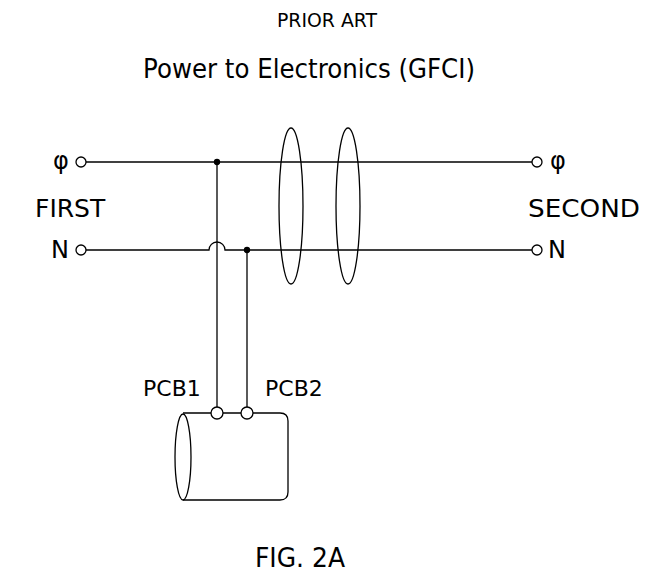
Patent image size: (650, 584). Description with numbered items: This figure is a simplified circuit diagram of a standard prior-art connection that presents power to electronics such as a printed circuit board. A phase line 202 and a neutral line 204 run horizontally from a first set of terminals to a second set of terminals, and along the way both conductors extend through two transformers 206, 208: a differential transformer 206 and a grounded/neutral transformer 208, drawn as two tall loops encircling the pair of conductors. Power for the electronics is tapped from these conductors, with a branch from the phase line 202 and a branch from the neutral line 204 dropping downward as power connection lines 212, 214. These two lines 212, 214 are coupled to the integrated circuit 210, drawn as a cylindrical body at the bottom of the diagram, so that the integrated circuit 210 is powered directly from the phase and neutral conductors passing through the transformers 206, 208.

The phase line 202 is at (152, 162).
The neutral line 204 is at (152, 252).
The differential transformer 206 is at (291, 128).
The grounded/neutral transformer 208 is at (348, 128).
The integrated circuit 210 is at (290, 452).
The power connection line 212 is at (247, 345).
The power connection line 214 is at (217, 345).